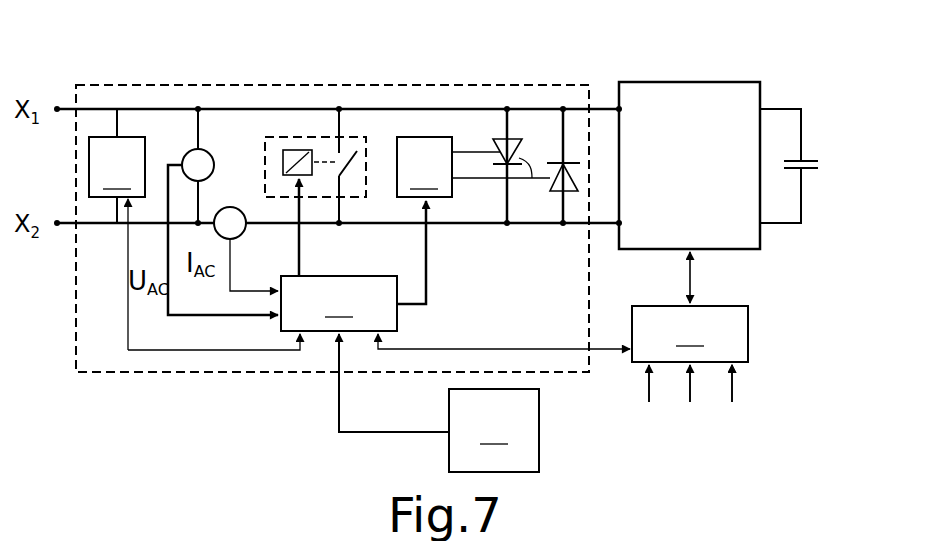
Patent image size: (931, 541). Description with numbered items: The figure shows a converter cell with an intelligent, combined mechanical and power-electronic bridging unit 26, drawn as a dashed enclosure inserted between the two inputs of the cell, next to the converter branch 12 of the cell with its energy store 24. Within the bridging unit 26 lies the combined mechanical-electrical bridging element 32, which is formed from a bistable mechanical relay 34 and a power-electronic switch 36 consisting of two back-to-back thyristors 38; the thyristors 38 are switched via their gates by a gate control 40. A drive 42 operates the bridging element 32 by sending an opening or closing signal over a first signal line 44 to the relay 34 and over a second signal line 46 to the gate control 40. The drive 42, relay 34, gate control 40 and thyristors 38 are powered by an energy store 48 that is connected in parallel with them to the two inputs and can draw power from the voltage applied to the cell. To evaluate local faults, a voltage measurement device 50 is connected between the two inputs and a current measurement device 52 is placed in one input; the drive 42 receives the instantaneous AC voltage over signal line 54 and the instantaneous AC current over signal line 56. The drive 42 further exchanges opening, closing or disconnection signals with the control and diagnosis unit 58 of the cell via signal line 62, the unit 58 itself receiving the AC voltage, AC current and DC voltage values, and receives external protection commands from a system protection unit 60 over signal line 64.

The converter branch 12 is at (702, 44).
The energy store 24 is at (811, 172).
The bridging unit 26 is at (222, 83).
The bridging element 32 is at (463, 80).
The relay 34 is at (358, 129).
The electronic switch 36 is at (536, 133).
The thyristor 38 is at (582, 180).
The gate control 40 is at (473, 167).
The drive 42 is at (339, 303).
The signal line 44 is at (301, 233).
The signal line 46 is at (428, 240).
The energy store 48 is at (117, 166).
The voltage measurement device 50 is at (216, 164).
The current measurement device 52 is at (244, 233).
The signal line 54 is at (200, 318).
The signal line 56 is at (240, 300).
The control/diagnosis unit 58 is at (692, 344).
The system protection unit 60 is at (494, 430).
The signal line 62 is at (524, 345).
The signal line 64 is at (356, 430).